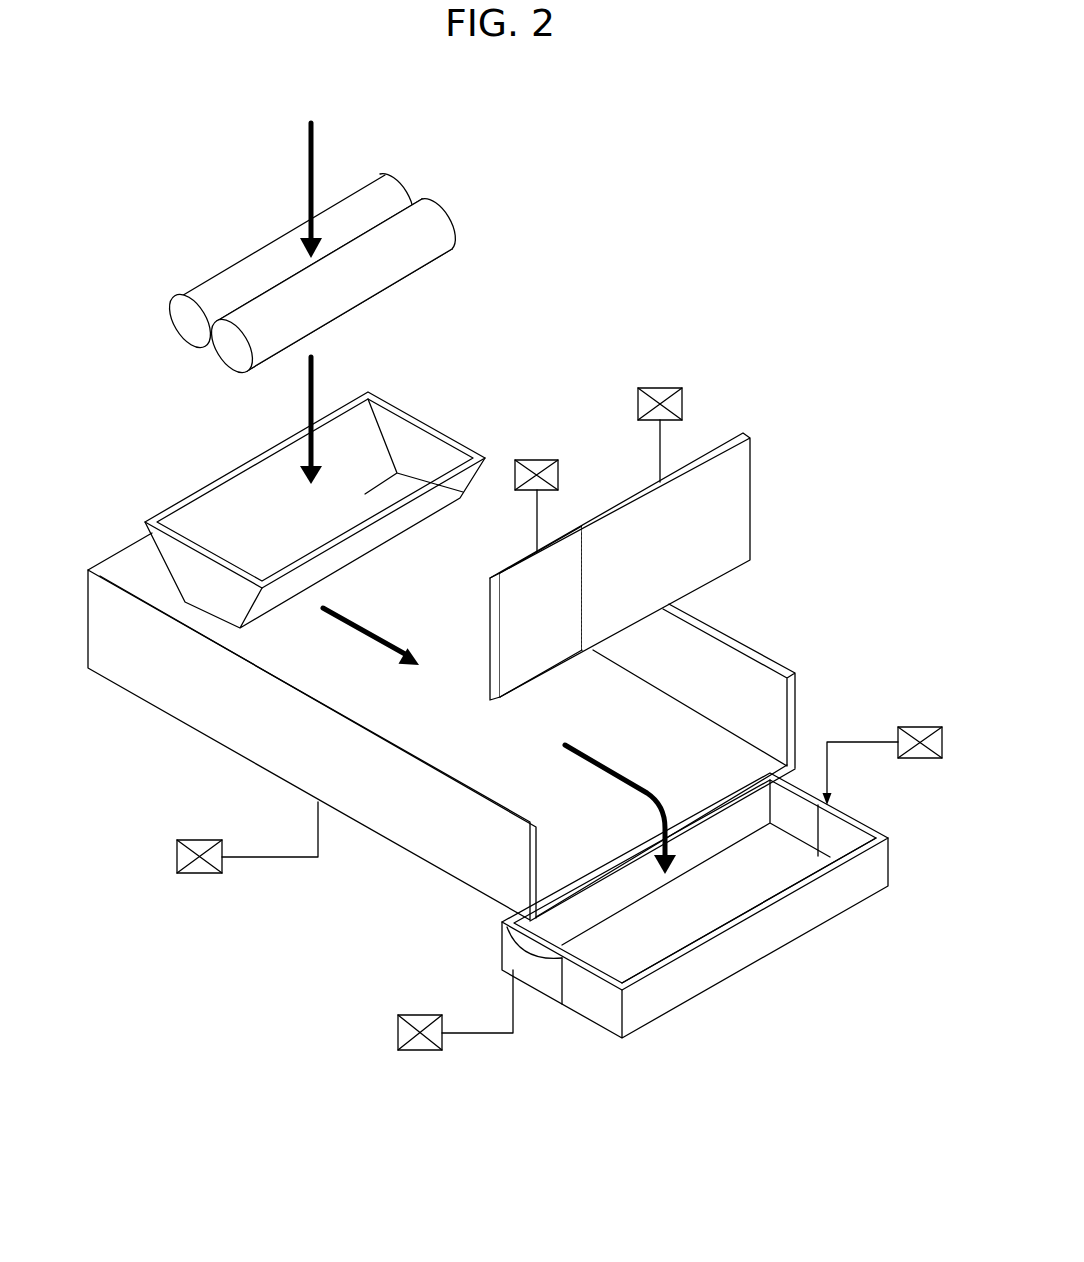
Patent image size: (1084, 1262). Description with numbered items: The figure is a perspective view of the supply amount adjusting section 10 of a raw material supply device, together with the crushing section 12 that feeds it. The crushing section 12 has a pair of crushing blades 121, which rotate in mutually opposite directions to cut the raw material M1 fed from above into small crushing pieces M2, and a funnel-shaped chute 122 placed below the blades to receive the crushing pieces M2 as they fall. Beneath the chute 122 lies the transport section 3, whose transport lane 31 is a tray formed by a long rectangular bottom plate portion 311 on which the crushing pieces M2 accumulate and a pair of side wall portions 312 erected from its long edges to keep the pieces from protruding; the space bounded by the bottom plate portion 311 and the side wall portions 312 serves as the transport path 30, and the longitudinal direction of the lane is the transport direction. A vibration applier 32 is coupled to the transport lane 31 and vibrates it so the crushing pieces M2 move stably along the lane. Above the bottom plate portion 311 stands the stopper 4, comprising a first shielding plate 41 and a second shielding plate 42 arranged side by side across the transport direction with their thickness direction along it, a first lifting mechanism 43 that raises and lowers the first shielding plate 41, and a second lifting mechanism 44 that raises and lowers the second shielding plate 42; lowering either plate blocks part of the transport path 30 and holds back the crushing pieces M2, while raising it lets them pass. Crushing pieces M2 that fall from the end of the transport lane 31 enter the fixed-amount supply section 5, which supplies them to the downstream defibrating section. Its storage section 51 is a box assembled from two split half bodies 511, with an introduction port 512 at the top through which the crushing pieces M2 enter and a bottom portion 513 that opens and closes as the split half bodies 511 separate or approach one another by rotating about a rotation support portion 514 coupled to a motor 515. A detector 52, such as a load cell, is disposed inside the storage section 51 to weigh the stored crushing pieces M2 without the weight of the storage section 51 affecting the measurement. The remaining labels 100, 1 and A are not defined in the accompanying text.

The three-dimensional shaping system 100 is at (877, 266).
The supply amount adjusting section 10 is at (716, 310).
The material supply device 1 is at (544, 310).
The crushing section 12 is at (144, 297).
The crushing blades 121 is at (435, 228).
The chute 122 is at (205, 515).
The transport section 3 is at (126, 537).
The transport path 30 is at (417, 703).
The transport lane 31 is at (88, 613).
The bottom plate portion 311 is at (463, 723).
The side wall portions 312 is at (140, 665).
The vibration applier 32 is at (199, 840).
The stopper 4 is at (758, 423).
The first shielding plate 41 is at (568, 567).
The second shielding plate 42 is at (708, 490).
The first lifting mechanism 43 is at (537, 460).
The second lifting mechanism 44 is at (660, 388).
The fixed-amount supply section 5 is at (802, 941).
The storage section 51 is at (890, 861).
The split half bodies 511 is at (533, 975).
The introduction port 512 is at (795, 880).
The bottom portion 513 is at (687, 943).
The rotation support portion 514 is at (558, 956).
The motor 515 is at (920, 727).
The detector 52 is at (421, 1015).
The raw material M1 is at (311, 172).
The crushing piece M2 is at (313, 372).
The region A is at (812, 1002).